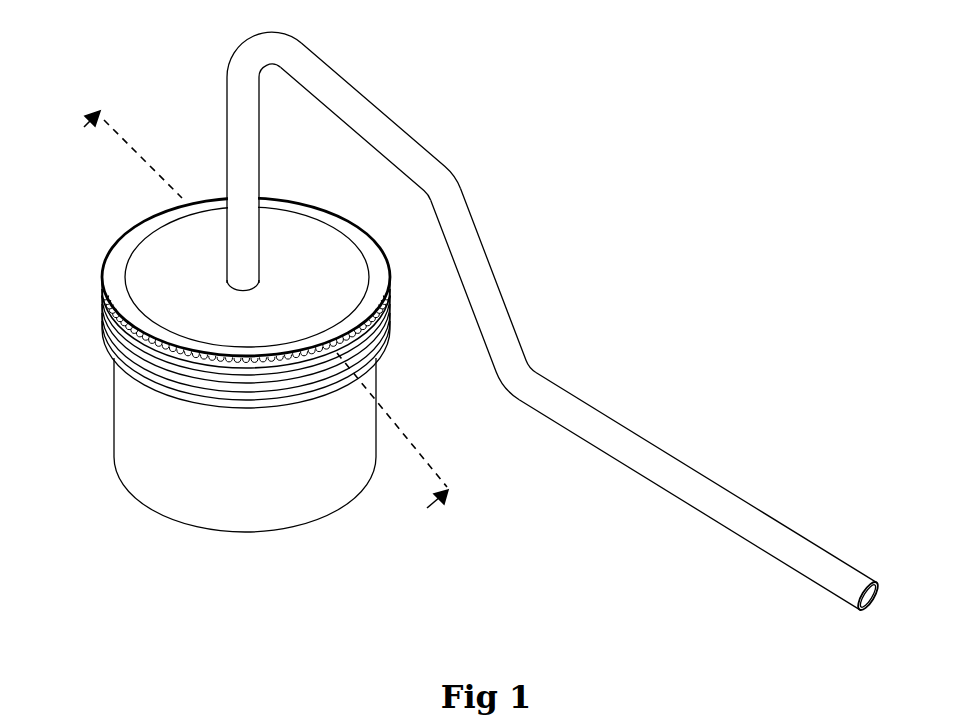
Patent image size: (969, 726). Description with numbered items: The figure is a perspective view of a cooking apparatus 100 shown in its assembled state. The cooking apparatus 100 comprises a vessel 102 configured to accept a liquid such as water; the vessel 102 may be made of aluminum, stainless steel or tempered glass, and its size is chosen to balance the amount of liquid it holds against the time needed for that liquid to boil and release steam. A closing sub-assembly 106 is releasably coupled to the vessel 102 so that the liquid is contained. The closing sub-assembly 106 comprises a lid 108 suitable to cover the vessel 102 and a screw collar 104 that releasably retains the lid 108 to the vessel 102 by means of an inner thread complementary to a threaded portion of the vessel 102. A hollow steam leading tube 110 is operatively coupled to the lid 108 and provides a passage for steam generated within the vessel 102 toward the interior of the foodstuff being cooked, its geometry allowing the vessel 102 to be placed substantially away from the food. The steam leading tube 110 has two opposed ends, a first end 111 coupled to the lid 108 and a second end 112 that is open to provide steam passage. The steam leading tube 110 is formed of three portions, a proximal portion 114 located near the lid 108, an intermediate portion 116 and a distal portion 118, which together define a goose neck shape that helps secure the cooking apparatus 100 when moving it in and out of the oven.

The cooking apparatus 100 is at (459, 341).
The vessel 102 is at (278, 445).
The screw collar 104 is at (128, 340).
The closing sub-assembly 106 is at (336, 265).
The lid 108 is at (229, 307).
The steam leading tube 110 is at (574, 440).
The first end 111 is at (228, 282).
The second end 112 is at (873, 602).
The proximal portion 114 is at (245, 168).
The intermediate portion 116 is at (433, 167).
The distal portion 118 is at (747, 520).